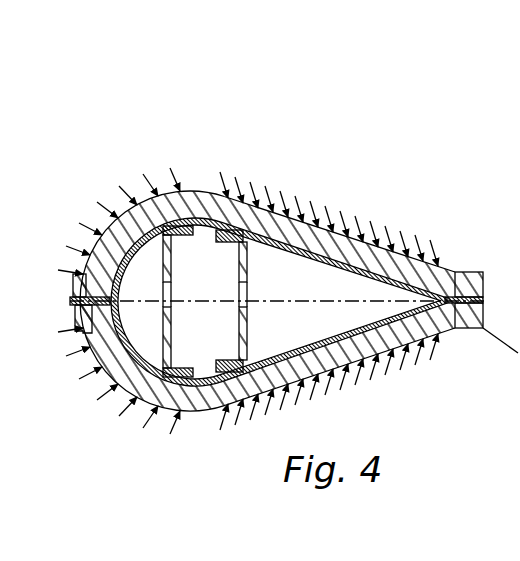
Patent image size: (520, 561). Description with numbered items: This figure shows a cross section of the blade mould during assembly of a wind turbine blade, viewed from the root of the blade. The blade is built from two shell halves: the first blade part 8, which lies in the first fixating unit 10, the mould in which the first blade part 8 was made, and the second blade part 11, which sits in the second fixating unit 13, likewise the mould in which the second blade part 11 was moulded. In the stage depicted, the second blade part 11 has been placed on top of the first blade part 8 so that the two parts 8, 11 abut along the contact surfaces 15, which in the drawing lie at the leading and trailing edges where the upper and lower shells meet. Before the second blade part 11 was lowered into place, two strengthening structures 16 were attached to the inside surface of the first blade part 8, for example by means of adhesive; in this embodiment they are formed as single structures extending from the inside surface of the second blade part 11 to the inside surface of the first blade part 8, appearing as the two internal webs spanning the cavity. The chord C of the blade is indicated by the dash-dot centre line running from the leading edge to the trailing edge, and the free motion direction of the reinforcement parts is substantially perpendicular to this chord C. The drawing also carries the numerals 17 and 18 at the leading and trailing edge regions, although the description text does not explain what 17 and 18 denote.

The first blade part 8 is at (126, 392).
The first fixating unit 10 is at (402, 358).
The second blade part 11 is at (206, 216).
The second fixating unit 13 is at (310, 206).
The contact surfaces 15 is at (85, 270).
The strengthening structures 16 is at (166, 230).
The leading edge fitting 17 is at (90, 336).
The trailing edge fitting 18 is at (456, 330).
The chord C is at (376, 296).